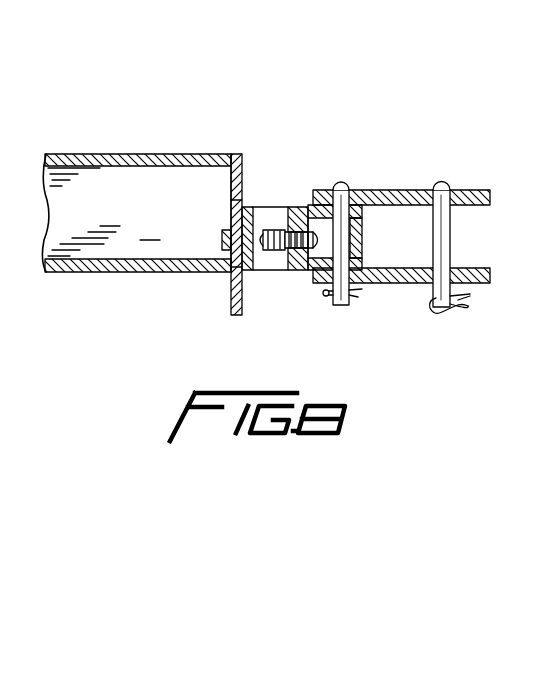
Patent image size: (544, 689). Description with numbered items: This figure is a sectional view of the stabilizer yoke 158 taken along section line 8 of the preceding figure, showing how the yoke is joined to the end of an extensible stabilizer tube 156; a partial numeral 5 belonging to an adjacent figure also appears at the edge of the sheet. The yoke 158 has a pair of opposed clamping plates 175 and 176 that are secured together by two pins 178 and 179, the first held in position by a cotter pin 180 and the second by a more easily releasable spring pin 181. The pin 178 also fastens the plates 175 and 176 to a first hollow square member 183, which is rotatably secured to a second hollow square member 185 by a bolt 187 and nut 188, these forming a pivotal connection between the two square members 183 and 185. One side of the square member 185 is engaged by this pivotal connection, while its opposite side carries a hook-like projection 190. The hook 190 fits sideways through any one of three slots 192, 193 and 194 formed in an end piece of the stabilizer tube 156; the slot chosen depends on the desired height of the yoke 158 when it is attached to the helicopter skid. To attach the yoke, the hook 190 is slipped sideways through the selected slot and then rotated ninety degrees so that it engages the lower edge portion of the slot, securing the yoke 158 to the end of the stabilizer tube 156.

The section line 8 is at (2, 263).
The adjacent figure reference numeral 5 is at (5, 341).
The extensible stabilizer tube 156 is at (118, 154).
The stabilizer yoke 158 is at (428, 184).
The clamping plate 175 is at (471, 189).
The clamping plate 176 is at (468, 268).
The pin 178 is at (342, 307).
The pin 179 is at (433, 296).
The cotter pin 180 is at (322, 297).
The spring pin 181 is at (456, 310).
The first hollow square member 183 is at (312, 192).
The second hollow square member 185 is at (291, 206).
The bolt 187 is at (263, 229).
The nut 188 is at (262, 271).
The hook-like projection 190 is at (224, 228).
The slot 192 is at (230, 196).
The slot 193 is at (223, 238).
The slot 194 is at (230, 290).